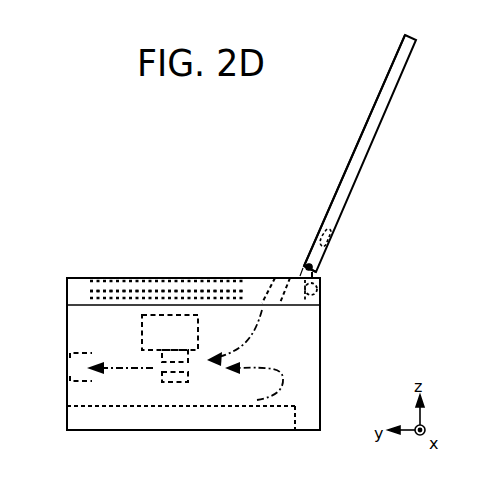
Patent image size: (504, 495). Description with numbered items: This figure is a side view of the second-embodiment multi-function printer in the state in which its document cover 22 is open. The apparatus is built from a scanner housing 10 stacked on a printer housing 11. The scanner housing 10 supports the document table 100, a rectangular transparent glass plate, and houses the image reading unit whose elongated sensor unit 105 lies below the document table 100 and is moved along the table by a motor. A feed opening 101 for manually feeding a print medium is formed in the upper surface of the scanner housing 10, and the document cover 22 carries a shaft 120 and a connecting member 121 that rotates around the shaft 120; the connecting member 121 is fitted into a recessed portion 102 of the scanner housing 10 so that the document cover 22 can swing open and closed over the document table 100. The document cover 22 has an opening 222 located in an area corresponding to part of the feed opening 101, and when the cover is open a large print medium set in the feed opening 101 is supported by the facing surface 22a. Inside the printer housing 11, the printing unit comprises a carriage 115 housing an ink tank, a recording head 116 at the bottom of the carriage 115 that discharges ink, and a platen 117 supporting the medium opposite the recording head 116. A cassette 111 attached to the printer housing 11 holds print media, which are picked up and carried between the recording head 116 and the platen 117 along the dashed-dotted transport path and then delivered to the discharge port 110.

The scanner housing 10 is at (320, 297).
The printer housing 11 is at (320, 358).
The document cover 22 is at (372, 127).
The facing surface 22a is at (380, 88).
The opening 222 is at (332, 241).
The document table 100 is at (125, 278).
The feed opening 101 is at (275, 272).
The recessed portion 102 is at (323, 302).
The sensor unit 105 is at (90, 292).
The discharge port 110 is at (70, 373).
The cassette 111 is at (93, 418).
The carriage 115 is at (141, 330).
The recording head 116 is at (162, 360).
The platen 117 is at (162, 380).
The shaft 120 is at (316, 267).
The connecting member 121 is at (305, 266).